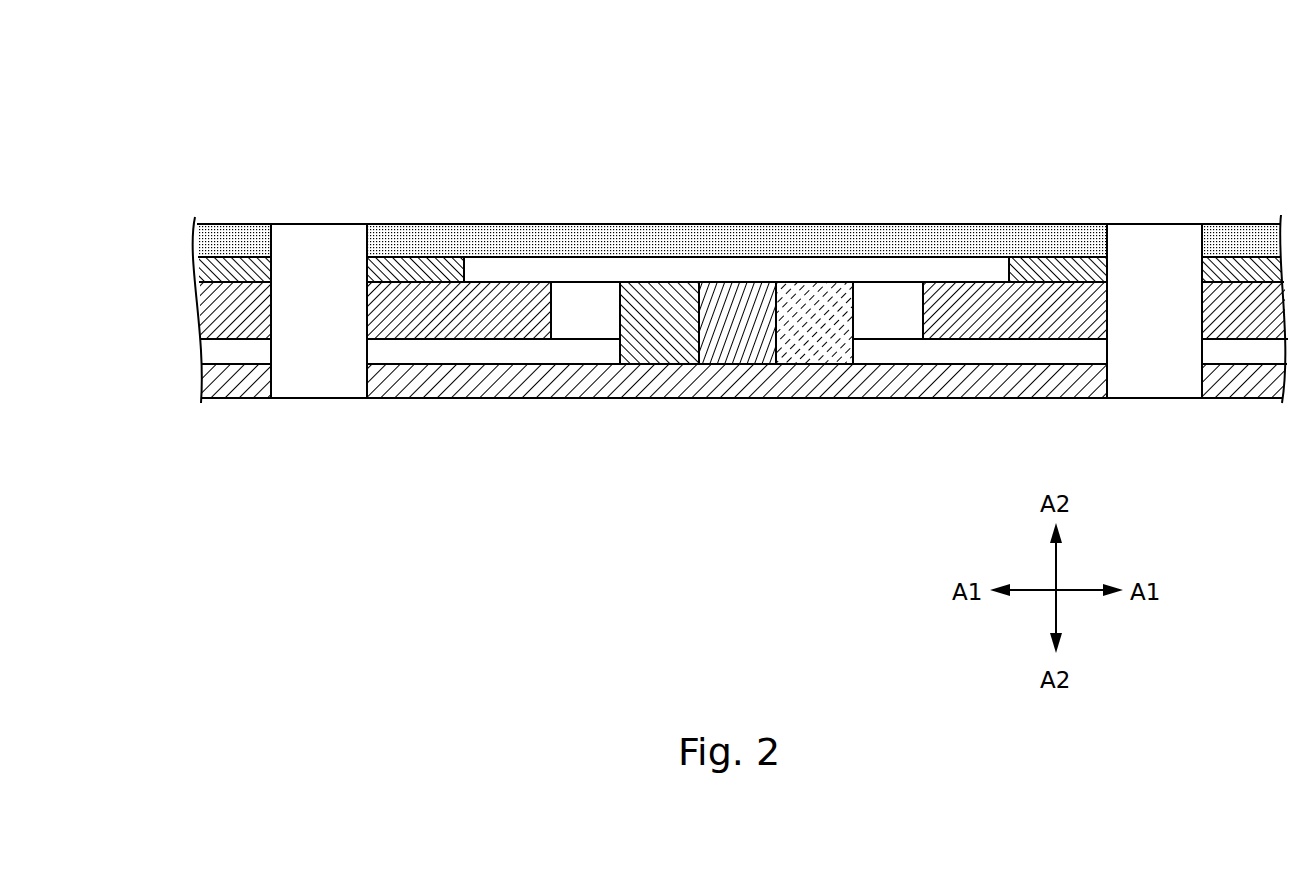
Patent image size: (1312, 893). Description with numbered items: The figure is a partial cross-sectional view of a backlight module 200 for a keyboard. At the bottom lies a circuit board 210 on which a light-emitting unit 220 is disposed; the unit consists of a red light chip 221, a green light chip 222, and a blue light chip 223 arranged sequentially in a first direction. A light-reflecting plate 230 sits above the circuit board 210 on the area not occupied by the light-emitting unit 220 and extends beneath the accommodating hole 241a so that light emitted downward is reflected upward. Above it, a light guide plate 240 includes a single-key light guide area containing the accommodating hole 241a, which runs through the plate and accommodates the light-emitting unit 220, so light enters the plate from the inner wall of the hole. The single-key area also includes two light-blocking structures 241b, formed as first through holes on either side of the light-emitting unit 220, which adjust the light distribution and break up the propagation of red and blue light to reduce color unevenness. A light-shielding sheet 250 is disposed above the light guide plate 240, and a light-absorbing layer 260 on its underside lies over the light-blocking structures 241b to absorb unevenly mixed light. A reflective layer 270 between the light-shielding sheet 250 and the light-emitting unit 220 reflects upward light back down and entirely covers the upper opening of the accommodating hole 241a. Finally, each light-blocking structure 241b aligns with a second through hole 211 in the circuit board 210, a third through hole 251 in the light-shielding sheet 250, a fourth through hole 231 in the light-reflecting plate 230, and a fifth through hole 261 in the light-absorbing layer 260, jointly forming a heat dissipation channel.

The backlight module 200 is at (1300, 73).
The circuit board 210 is at (208, 380).
The second through hole 211 is at (395, 388).
The light-emitting unit 220 is at (852, 455).
The red light chip 221 is at (658, 352).
The green light chip 222 is at (735, 352).
The blue light chip 223 is at (813, 352).
The light-reflecting plate 230 is at (208, 350).
The fourth through hole 231 is at (389, 353).
The light guide plate 240 is at (210, 306).
The accommodating hole 241a is at (937, 328).
The light-blocking structure 241b is at (258, 324).
The light-shielding sheet 250 is at (210, 238).
The third through hole 251 is at (388, 238).
The light-absorbing layer 260 is at (207, 267).
The fifth through hole 261 is at (389, 266).
The reflective layer 270 is at (503, 270).